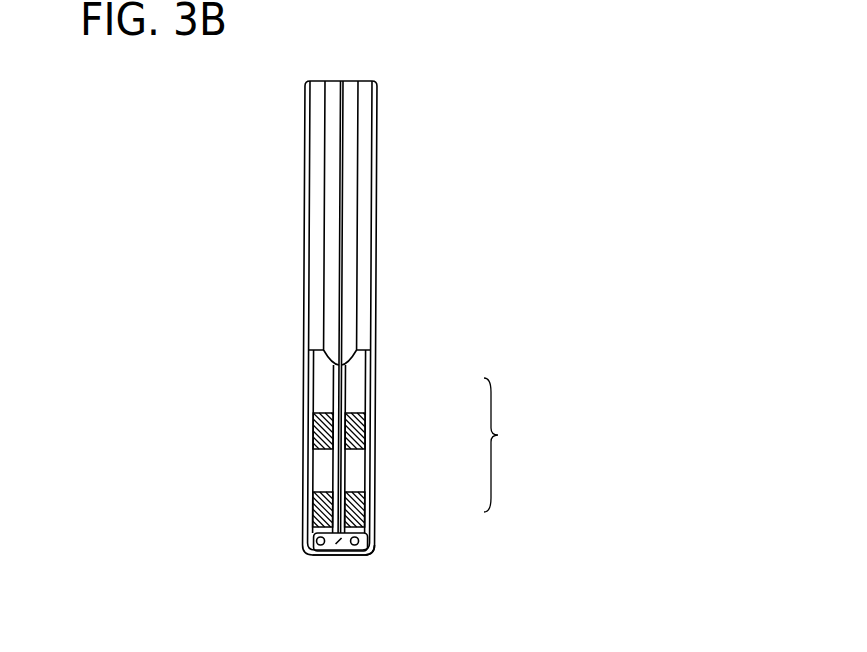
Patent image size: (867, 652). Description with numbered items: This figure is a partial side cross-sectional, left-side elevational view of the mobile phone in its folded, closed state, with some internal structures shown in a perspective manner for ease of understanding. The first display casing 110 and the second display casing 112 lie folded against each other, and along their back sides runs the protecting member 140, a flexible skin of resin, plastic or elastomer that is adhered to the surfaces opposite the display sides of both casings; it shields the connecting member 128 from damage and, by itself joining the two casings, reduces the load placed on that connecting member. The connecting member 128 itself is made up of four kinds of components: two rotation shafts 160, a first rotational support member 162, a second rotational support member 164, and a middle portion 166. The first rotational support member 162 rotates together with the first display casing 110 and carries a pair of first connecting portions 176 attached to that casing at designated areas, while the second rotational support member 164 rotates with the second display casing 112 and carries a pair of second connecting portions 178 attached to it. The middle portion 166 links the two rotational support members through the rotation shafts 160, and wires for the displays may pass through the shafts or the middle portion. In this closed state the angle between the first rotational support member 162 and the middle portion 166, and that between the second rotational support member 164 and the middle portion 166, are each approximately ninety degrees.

The first display casing 110 is at (317, 170).
The second display casing 112 is at (367, 170).
The connecting member 128 is at (512, 445).
The protecting member 140 is at (360, 554).
The rotation shafts 160 is at (362, 555).
The first rotational support member 162 is at (324, 492).
The second rotational support member 164 is at (370, 505).
The middle portion 166 is at (370, 508).
The first connecting portion 176 is at (330, 448).
The second connecting portions 178 is at (355, 437).